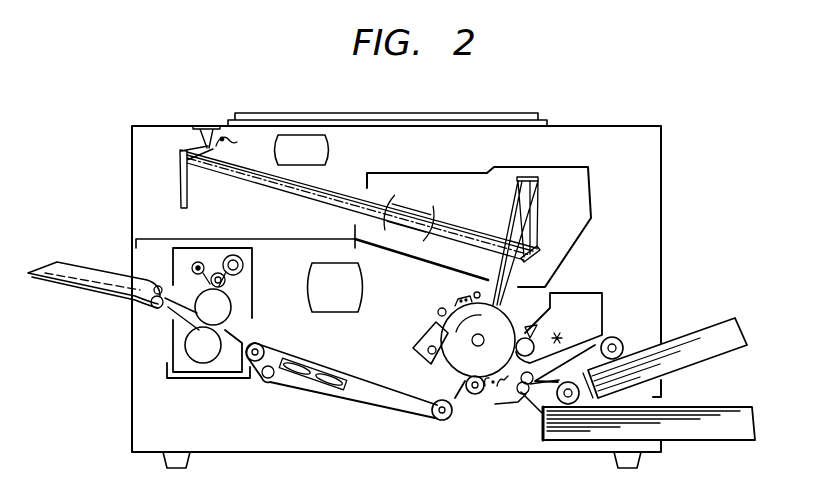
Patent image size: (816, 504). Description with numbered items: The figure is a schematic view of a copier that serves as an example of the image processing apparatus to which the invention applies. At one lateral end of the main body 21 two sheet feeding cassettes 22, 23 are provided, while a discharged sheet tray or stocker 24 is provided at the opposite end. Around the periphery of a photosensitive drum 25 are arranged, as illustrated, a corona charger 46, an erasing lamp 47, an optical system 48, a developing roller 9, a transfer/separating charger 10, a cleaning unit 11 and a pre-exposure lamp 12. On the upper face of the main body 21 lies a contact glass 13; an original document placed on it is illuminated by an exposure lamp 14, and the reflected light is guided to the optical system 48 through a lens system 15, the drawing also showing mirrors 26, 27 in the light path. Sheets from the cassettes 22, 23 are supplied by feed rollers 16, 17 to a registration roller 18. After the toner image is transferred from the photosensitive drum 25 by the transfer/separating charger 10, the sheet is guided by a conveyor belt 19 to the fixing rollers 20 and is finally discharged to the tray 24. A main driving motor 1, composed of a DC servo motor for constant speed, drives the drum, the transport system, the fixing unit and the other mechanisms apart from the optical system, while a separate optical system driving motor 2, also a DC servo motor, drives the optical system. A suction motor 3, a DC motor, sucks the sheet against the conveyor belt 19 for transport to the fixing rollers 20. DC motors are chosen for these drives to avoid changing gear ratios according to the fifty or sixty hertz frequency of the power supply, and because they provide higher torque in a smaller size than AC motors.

The main driving motor 1 is at (365, 278).
The optical system driving motor 2 is at (317, 143).
The suction motor 3 is at (333, 390).
The developing roller 9 is at (537, 340).
The transfer/separating charger 10 is at (492, 393).
The cleaning unit 11 is at (415, 346).
The pre-exposure lamp 12 is at (438, 312).
The contact glass 13 is at (384, 113).
The exposure lamp 14 is at (220, 167).
The lens system 15 is at (428, 188).
The feed roller 16 is at (618, 336).
The feed roller 17 is at (538, 400).
The registration roller 18 is at (508, 390).
The conveyor belt 19 is at (352, 375).
The fixing rollers 20 is at (236, 297).
The main body 21 is at (661, 228).
The sheet feeding cassette 22 is at (725, 325).
The sheet feeding cassette 23 is at (728, 407).
The discharged sheet tray 24 is at (80, 288).
The photosensitive drum 25 is at (503, 307).
The mirror 26 is at (540, 240).
The mirror 27 is at (540, 182).
The corona charger 46 is at (455, 300).
The erasing lamp 47 is at (472, 291).
The optical system 48 is at (495, 268).